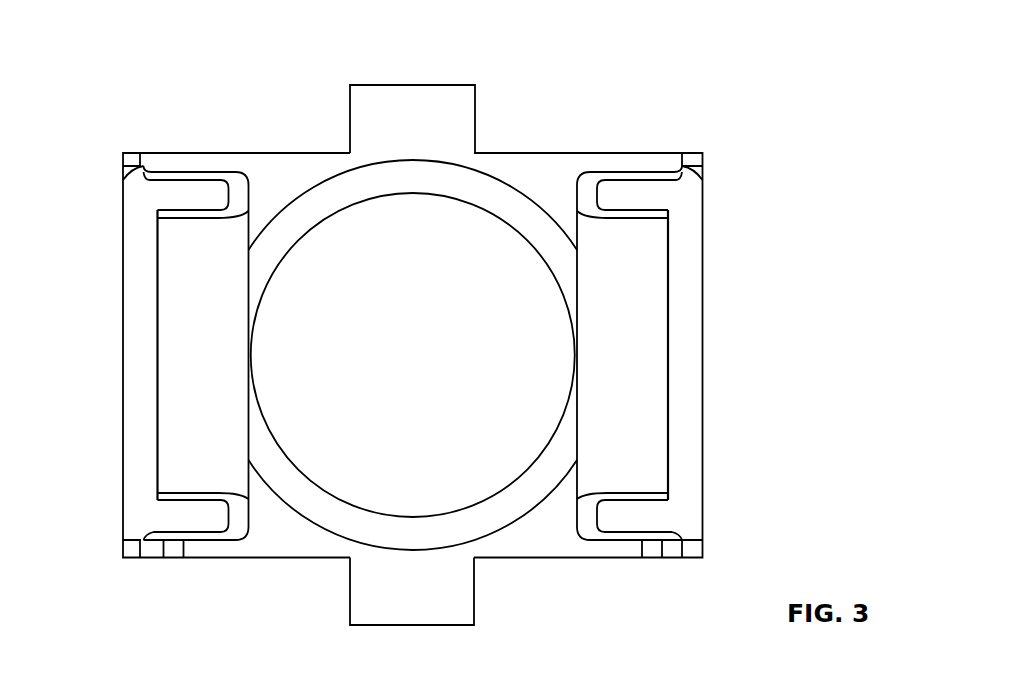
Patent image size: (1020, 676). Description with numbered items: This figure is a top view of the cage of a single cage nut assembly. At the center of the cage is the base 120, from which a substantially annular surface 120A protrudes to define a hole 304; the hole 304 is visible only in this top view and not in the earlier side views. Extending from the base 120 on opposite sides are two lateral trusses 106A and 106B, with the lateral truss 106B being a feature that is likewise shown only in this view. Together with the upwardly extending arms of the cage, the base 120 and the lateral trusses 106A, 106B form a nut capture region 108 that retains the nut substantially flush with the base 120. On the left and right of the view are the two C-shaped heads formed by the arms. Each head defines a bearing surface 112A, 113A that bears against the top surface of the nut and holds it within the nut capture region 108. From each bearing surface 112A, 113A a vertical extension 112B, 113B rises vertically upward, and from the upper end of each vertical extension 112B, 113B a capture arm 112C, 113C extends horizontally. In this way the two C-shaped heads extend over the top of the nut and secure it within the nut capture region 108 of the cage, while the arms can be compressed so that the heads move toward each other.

The lateral truss 106A is at (460, 612).
The lateral truss 106B is at (423, 95).
The nut capture region 108 is at (545, 512).
The bearing surface 112A is at (652, 193).
The vertical extension 112B is at (678, 320).
The capture arm 112C is at (635, 400).
The bearing surface 113A is at (168, 188).
The vertical extension 113B is at (145, 316).
The capture arm 113C is at (177, 363).
The base 120 is at (548, 182).
The annular surface 120A is at (433, 364).
The hole 304 is at (434, 367).